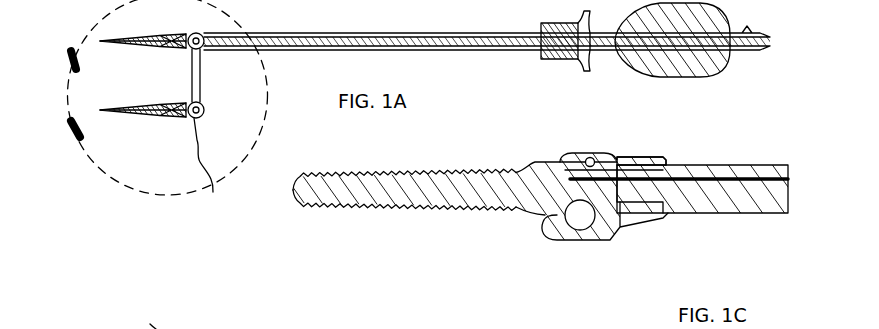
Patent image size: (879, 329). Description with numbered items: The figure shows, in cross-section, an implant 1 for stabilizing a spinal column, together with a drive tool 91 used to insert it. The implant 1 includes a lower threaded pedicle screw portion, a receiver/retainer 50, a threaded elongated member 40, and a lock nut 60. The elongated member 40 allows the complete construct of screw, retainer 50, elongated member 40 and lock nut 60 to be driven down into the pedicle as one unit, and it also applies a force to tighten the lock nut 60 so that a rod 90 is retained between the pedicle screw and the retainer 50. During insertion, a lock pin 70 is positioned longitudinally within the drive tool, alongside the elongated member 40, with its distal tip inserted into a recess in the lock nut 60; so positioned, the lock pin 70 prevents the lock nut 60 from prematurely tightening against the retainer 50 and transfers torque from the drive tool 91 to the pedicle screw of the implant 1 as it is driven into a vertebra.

In FIG. 1A, the implant 1 is at (150, 143).
In FIG. 1C, the implant 1 is at (145, 310).
In FIG. 1C, the threaded elongated member 40 is at (665, 183).
In FIG. 1A, the receiver/retainer 50 is at (486, 26).
In FIG. 1C, the receiver/retainer 50 is at (606, 238).
In FIG. 1C, the lock nut 60 is at (404, 239).
In FIG. 1C, the lock pin 70 is at (497, 320).
In FIG. 1C, the rod 90 is at (563, 233).
In FIG. 1A, the drive tool 91 is at (535, 72).